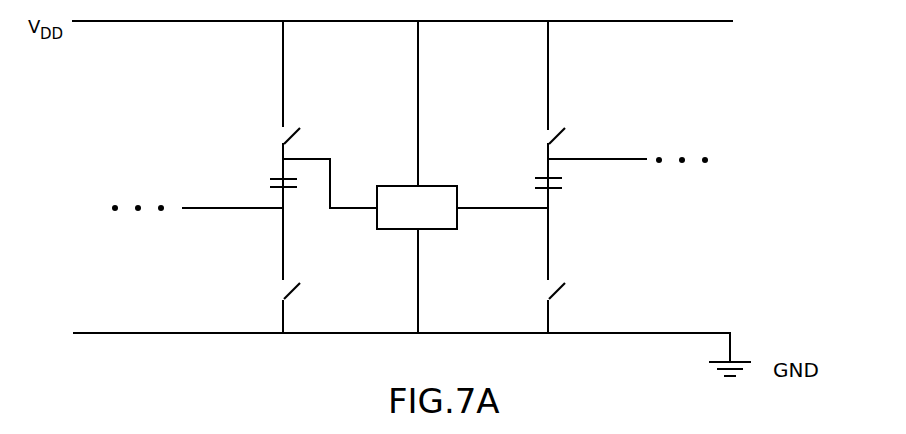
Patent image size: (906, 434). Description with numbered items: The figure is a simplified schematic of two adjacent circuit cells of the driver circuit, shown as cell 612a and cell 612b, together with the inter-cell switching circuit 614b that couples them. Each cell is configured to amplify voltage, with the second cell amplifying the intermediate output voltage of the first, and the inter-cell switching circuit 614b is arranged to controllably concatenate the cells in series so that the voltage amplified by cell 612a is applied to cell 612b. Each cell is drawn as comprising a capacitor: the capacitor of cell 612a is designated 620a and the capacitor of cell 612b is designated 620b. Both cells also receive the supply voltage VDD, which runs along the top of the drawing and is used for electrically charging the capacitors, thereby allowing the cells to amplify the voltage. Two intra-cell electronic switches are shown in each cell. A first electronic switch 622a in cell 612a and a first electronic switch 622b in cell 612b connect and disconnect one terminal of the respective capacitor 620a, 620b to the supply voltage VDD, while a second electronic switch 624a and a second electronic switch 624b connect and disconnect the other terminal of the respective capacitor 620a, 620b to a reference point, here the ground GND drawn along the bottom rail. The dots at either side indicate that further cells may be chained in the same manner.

The cell 612a is at (228, 100).
The cell 612b is at (506, 99).
The inter-cell switching circuit 614b is at (417, 177).
The capacitor 620a is at (259, 183).
The capacitor 620b is at (521, 183).
The first electronic switch 622a is at (296, 120).
The first electronic switch 622b is at (574, 118).
The second electronic switch 624a is at (272, 290).
The second electronic switch 624b is at (540, 298).